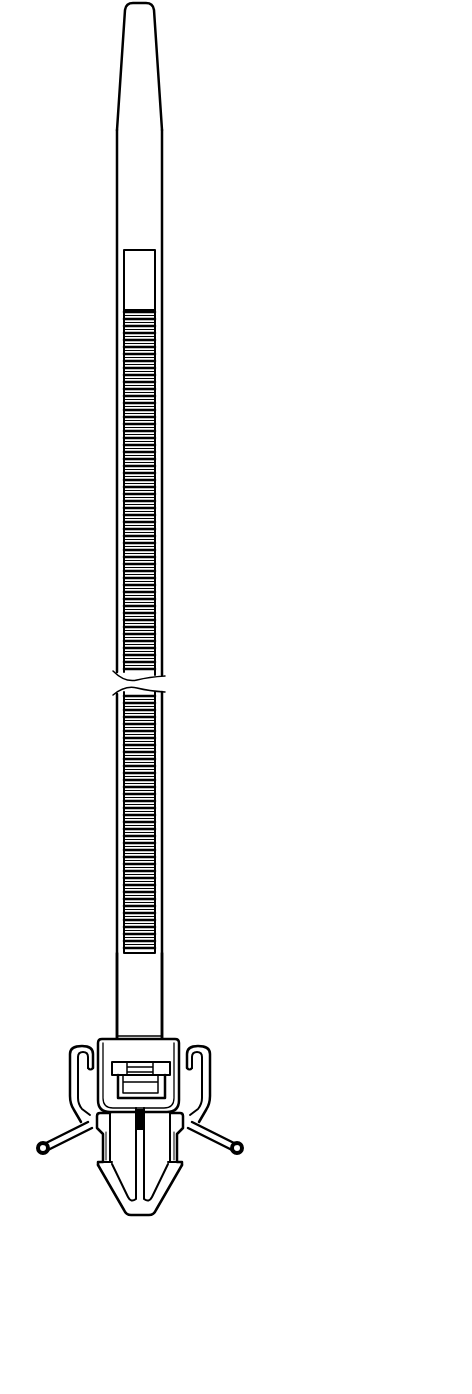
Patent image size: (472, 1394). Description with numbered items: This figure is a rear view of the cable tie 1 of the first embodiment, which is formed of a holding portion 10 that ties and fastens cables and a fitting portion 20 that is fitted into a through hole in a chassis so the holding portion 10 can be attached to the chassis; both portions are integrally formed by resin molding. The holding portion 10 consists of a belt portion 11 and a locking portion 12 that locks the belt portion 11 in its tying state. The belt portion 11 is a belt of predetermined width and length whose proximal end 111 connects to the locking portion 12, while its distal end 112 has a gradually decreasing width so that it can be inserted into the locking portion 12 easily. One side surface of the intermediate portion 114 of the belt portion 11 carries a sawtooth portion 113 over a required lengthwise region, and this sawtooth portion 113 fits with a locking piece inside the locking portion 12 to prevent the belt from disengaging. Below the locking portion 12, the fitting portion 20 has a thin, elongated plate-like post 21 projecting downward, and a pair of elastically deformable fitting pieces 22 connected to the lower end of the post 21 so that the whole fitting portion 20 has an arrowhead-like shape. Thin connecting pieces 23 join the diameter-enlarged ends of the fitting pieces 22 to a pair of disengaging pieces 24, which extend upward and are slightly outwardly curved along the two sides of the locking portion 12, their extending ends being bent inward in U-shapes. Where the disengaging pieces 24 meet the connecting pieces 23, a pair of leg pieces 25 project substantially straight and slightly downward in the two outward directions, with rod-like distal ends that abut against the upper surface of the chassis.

The cable tie 1 is at (187, 43).
The holding portion 10 is at (187, 562).
The belt portion 11 is at (162, 296).
The proximal end 111 is at (117, 998).
The distal end 112 is at (162, 100).
The sawtooth portion 113 is at (155, 472).
The intermediate portion 114 is at (161, 795).
The locking portion 12 is at (172, 1038).
The fitting portion 20 is at (243, 1058).
The post 21 is at (138, 1170).
The fitting pieces 22 is at (172, 1190).
The connecting pieces 23 is at (177, 1143).
The disengaging pieces 24 is at (207, 1078).
The leg pieces 25 is at (225, 1133).